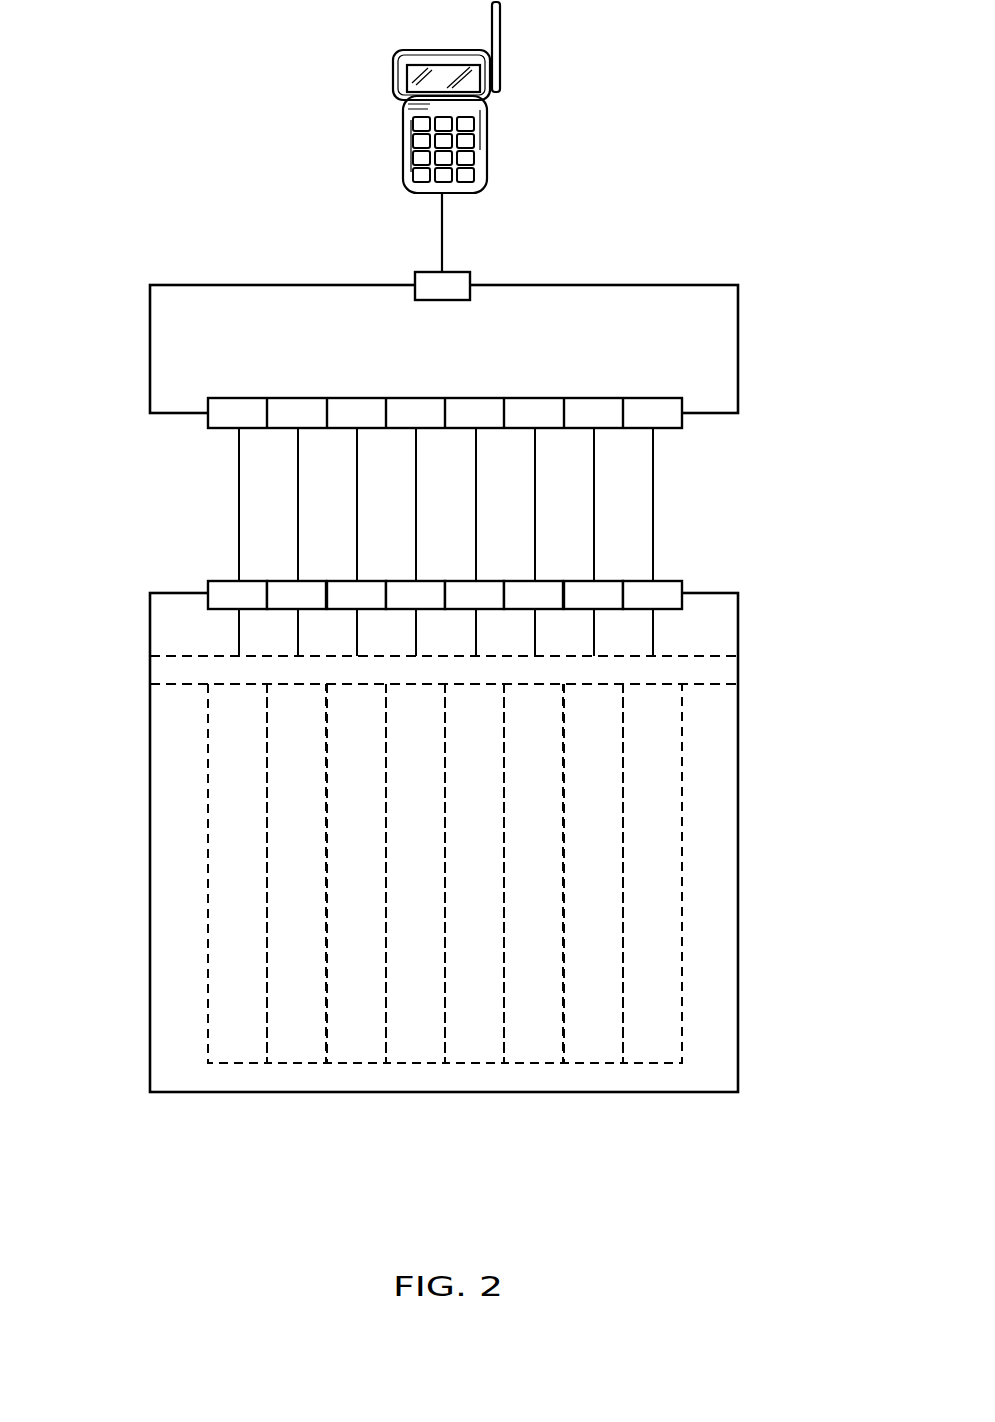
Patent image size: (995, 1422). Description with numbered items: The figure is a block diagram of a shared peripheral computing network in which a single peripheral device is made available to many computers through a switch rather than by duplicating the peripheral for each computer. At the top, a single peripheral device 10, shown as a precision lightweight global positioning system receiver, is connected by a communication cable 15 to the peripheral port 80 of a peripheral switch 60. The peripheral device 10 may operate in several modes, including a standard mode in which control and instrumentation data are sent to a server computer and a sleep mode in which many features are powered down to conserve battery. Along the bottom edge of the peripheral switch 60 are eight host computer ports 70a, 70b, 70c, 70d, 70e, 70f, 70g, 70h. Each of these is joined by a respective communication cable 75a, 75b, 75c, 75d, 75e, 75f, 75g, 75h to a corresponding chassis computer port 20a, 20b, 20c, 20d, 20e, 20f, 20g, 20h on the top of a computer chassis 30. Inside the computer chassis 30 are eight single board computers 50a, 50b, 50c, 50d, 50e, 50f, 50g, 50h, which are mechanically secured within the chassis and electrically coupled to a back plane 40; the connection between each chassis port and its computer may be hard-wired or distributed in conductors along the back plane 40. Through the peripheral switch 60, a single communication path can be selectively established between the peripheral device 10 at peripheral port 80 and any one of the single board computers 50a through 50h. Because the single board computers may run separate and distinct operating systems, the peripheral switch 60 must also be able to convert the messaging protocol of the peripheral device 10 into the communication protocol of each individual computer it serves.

The peripheral device 10 is at (500, 57).
The communication cable 15 is at (441, 230).
The peripheral port 80 is at (458, 271).
The peripheral switch 60 is at (738, 351).
The host computer port 70a is at (247, 430).
The host computer port 70b is at (306, 430).
The host computer port 70c is at (365, 430).
The host computer port 70d is at (424, 430).
The host computer port 70e is at (484, 430).
The host computer port 70f is at (543, 430).
The host computer port 70g is at (602, 430).
The host computer port 70h is at (661, 430).
The communication cable 75a is at (238, 503).
The communication cable 75b is at (298, 535).
The communication cable 75c is at (357, 535).
The communication cable 75d is at (416, 535).
The communication cable 75e is at (476, 535).
The communication cable 75f is at (535, 535).
The communication cable 75g is at (594, 535).
The communication cable 75h is at (653, 513).
The chassis computer port 20a is at (228, 587).
The chassis computer port 20b is at (341, 589).
The chassis computer port 20c is at (400, 589).
The chassis computer port 20d is at (459, 589).
The chassis computer port 20e is at (519, 589).
The chassis computer port 20f is at (578, 589).
The chassis computer port 20g is at (637, 589).
The chassis computer port 20h is at (696, 589).
The computer chassis 30 is at (168, 872).
The back plane 40 is at (722, 669).
The single board computer 50a is at (245, 1040).
The single board computer 50b is at (300, 1040).
The single board computer 50c is at (367, 1040).
The single board computer 50d is at (423, 1040).
The single board computer 50e is at (485, 1040).
The single board computer 50f is at (538, 1040).
The single board computer 50g is at (598, 1040).
The single board computer 50h is at (660, 1040).